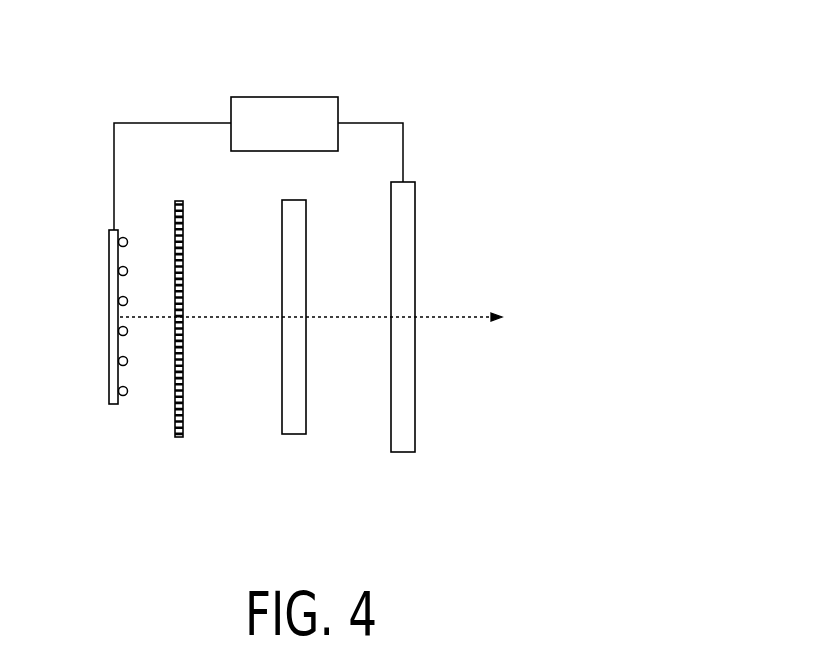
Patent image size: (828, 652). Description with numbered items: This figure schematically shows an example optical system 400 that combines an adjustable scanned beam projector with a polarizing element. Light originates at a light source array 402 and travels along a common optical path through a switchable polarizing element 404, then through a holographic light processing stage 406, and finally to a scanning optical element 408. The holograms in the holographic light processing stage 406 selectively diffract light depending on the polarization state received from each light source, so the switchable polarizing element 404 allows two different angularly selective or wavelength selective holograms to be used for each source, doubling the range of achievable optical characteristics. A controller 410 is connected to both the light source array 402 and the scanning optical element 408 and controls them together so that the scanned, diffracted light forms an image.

The optical system 400 is at (600, 55).
The light source array 402 is at (110, 284).
The switchable polarizing element 404 is at (180, 396).
The holographic light processing stage 406 is at (306, 371).
The scanning optical element 408 is at (415, 371).
The controller 410 is at (285, 97).